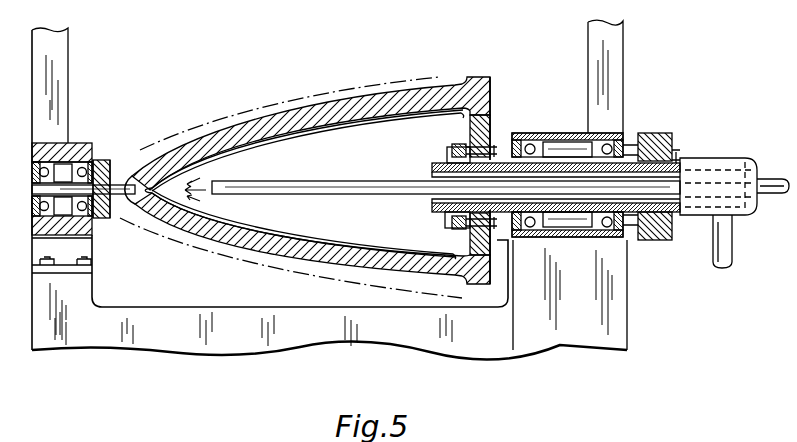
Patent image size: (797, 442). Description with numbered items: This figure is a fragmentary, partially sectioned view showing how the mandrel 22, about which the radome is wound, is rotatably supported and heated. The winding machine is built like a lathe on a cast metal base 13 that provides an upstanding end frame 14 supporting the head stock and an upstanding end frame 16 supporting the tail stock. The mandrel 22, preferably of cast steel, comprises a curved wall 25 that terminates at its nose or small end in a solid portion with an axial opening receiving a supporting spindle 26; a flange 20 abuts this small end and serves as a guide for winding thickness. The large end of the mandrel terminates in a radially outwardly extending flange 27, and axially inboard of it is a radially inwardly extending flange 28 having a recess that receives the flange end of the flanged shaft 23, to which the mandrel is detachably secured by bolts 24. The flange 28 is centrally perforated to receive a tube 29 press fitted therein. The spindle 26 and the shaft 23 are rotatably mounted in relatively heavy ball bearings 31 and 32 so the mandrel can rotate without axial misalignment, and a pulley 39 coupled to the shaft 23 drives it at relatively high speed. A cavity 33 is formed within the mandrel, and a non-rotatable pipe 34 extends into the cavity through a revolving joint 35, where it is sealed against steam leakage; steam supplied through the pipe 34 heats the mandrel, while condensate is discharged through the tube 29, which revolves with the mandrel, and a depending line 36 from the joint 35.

The base 13 is at (418, 338).
The upstanding end frame 14 is at (617, 304).
The upstanding end frame 16 is at (85, 281).
The flange 20 is at (105, 162).
The mandrel 22 is at (310, 252).
The flanged shaft 23 is at (491, 142).
The bolts 24 is at (503, 238).
The curved wall 25 is at (232, 238).
The supporting spindle 26 is at (112, 172).
The radially outwardly extending flange 27 is at (470, 84).
The radially inwardly extending flange 28 is at (468, 236).
The tube 29 is at (432, 166).
The ball bearing 31 is at (92, 224).
The ball bearing 32 is at (632, 228).
The cavity 33 is at (322, 219).
The pipe 34 is at (322, 181).
The revolving joint 35 is at (712, 157).
The depending line 36 is at (733, 256).
The pulley 39 is at (645, 133).